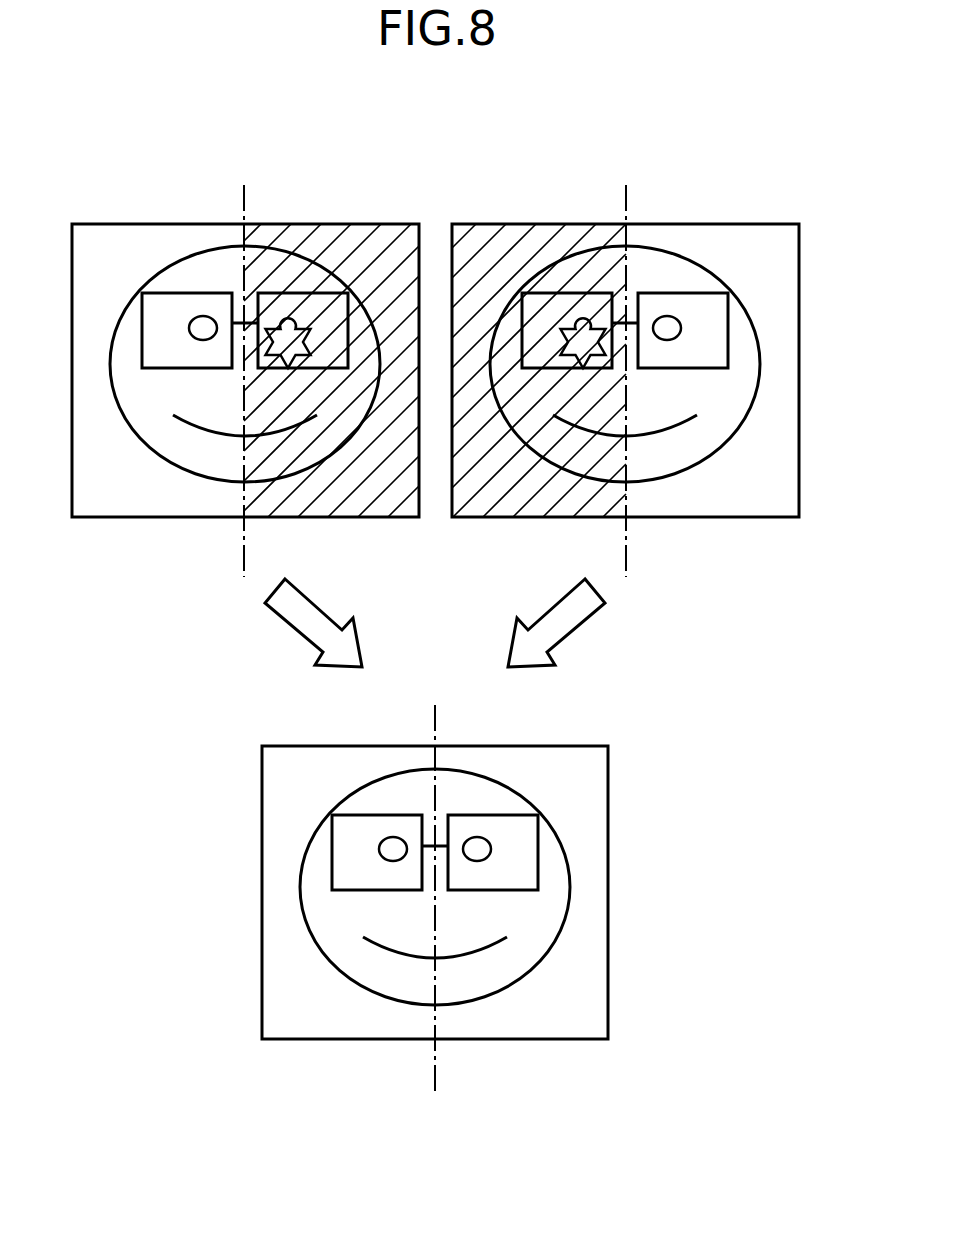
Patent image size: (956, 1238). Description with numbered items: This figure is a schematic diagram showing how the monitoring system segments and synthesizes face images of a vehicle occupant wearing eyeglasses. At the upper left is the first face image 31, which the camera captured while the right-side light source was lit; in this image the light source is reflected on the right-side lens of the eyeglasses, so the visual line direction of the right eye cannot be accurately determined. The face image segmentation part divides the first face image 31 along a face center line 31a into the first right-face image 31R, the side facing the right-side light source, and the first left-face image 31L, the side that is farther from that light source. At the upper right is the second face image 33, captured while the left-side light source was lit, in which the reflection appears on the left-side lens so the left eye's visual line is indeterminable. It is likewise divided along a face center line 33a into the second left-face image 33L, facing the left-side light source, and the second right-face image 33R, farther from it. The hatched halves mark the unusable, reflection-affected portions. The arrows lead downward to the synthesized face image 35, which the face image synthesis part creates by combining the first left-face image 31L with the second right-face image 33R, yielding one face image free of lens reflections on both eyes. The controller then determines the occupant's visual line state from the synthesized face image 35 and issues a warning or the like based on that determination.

The first face image 31 is at (284, 190).
The first left-face image 31L is at (143, 224).
The first right-face image 31R is at (353, 224).
The face center line 31a is at (245, 208).
The second face image 33 is at (664, 190).
The second left-face image 33L is at (523, 224).
The second right-face image 33R is at (733, 224).
The face center line 33a is at (626, 208).
The synthesized face image 35 is at (456, 722).